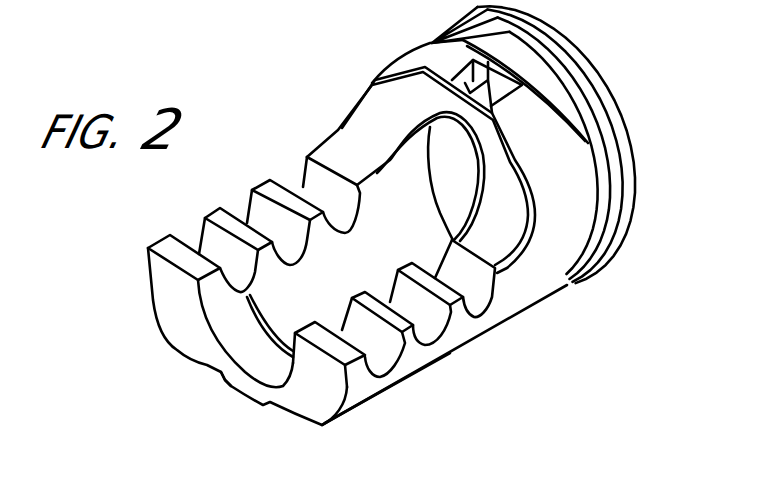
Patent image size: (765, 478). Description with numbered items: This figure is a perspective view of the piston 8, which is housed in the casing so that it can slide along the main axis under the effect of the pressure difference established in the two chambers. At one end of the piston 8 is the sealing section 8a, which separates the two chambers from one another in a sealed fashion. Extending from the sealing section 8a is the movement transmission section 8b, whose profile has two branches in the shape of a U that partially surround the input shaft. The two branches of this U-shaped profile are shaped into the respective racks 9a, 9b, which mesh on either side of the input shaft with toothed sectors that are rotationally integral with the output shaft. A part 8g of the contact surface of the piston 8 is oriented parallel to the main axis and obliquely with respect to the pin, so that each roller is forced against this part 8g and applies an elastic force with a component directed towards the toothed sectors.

The piston 8 is at (338, 122).
The sealing section 8a is at (663, 236).
The movement transmission section 8b is at (556, 306).
The part of the contact surface 8g is at (217, 380).
The rack 9a is at (368, 329).
The rack 9b is at (220, 247).